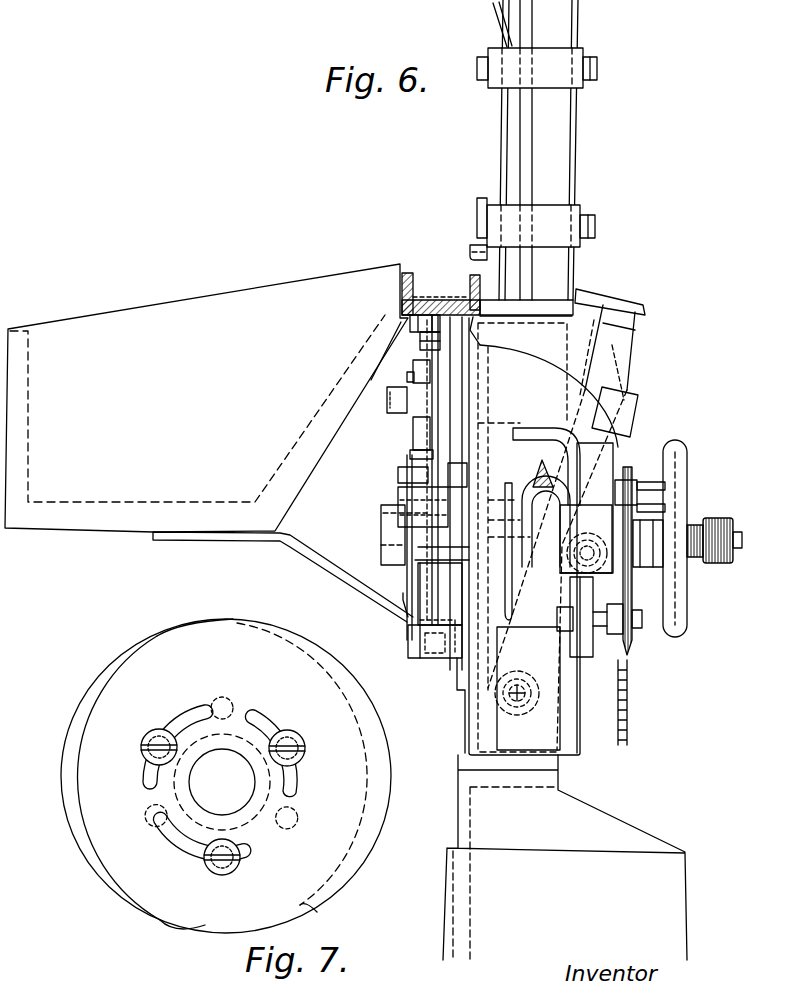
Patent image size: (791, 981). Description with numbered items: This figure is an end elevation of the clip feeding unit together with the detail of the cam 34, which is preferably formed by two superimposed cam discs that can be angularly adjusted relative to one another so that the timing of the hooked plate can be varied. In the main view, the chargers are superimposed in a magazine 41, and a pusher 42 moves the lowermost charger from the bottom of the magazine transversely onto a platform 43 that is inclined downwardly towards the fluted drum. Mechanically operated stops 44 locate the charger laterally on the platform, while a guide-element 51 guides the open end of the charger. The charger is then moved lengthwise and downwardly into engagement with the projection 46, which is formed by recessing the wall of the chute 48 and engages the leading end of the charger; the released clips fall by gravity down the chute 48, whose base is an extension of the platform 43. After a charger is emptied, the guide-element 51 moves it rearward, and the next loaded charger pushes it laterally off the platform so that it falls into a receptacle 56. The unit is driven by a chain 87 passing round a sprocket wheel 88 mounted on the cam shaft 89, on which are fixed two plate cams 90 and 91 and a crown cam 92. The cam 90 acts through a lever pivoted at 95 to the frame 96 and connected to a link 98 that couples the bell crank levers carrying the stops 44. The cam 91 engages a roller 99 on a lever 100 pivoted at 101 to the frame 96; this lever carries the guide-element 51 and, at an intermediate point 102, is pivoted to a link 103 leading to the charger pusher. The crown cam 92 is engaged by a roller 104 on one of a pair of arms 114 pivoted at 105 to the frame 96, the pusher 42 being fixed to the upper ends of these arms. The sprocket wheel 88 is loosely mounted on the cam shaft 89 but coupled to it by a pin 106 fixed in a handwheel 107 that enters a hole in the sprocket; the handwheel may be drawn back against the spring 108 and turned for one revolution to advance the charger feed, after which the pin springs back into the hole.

In FIG. 7, the cam 34 is at (100, 792).
In FIG. 6, the magazine 41 is at (560, 147).
In FIG. 6, the pusher 42 is at (613, 302).
In FIG. 6, the platform 43 is at (441, 298).
In FIG. 6, the stops 44 is at (415, 322).
In FIG. 6, the projection 46 is at (476, 292).
In FIG. 6, the chute 48 is at (408, 292).
In FIG. 6, the guide-element 51 is at (421, 341).
In FIG. 6, the receptacle 56 is at (180, 316).
In FIG. 6, the chain 87 is at (624, 712).
In FIG. 6, the sprocket wheel 88 is at (628, 478).
In FIG. 6, the cam shaft 89 is at (381, 530).
In FIG. 6, the plate cam 90 is at (410, 612).
In FIG. 6, the plate cam 91 is at (448, 650).
In FIG. 6, the crown cam 92 is at (543, 462).
In FIG. 6, the pivot 95 is at (412, 602).
In FIG. 6, the frame 96 is at (526, 766).
In FIG. 6, the link 98 is at (398, 405).
In FIG. 6, the roller 99 is at (488, 476).
In FIG. 6, the lever 100 is at (440, 432).
In FIG. 6, the pivot 101 is at (416, 432).
In FIG. 6, the intermediate point 102 is at (414, 369).
In FIG. 6, the link 103 is at (408, 378).
In FIG. 6, the roller 104 is at (573, 596).
In FIG. 6, the pivot 105 is at (527, 688).
In FIG. 6, the pin 106 is at (640, 480).
In FIG. 6, the handwheel 107 is at (685, 615).
In FIG. 6, the spring 108 is at (690, 556).
In FIG. 6, the arms 114 is at (627, 363).